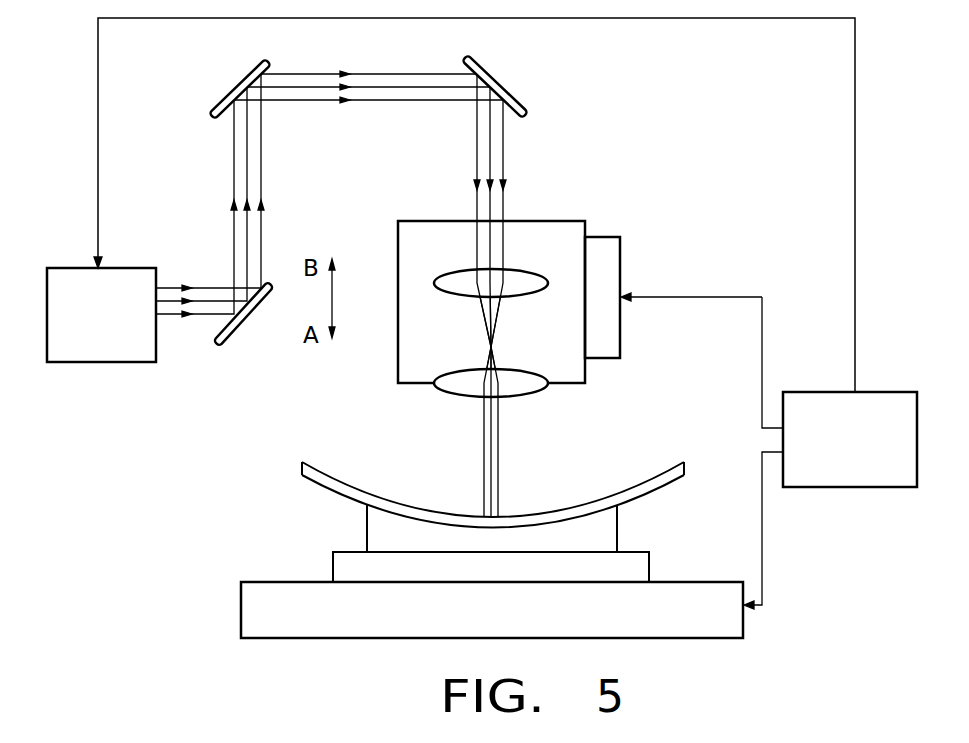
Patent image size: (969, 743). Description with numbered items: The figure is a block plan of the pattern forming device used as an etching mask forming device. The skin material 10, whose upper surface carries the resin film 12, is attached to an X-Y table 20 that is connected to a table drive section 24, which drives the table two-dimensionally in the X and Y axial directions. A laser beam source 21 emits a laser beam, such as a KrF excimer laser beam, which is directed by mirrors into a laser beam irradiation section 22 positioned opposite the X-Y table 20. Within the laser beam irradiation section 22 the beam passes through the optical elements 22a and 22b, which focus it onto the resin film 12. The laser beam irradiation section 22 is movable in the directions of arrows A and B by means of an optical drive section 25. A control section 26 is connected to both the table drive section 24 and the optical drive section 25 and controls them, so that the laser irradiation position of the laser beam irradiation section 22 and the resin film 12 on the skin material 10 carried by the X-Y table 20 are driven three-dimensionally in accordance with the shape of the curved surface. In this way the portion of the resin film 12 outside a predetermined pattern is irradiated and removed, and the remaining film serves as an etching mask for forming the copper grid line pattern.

The skin material 10 is at (688, 465).
The resin film 12 is at (645, 481).
The X-Y table 20 is at (618, 538).
The laser beam source 21 is at (126, 268).
The laser beam irradiation section 22 is at (561, 220).
The lens of laser beam irradiation section 22a is at (433, 281).
The lens of laser beam irradiation section 22b is at (447, 393).
The table drive section 24 is at (257, 581).
The optical drive section 25 is at (621, 256).
The control section 26 is at (818, 392).